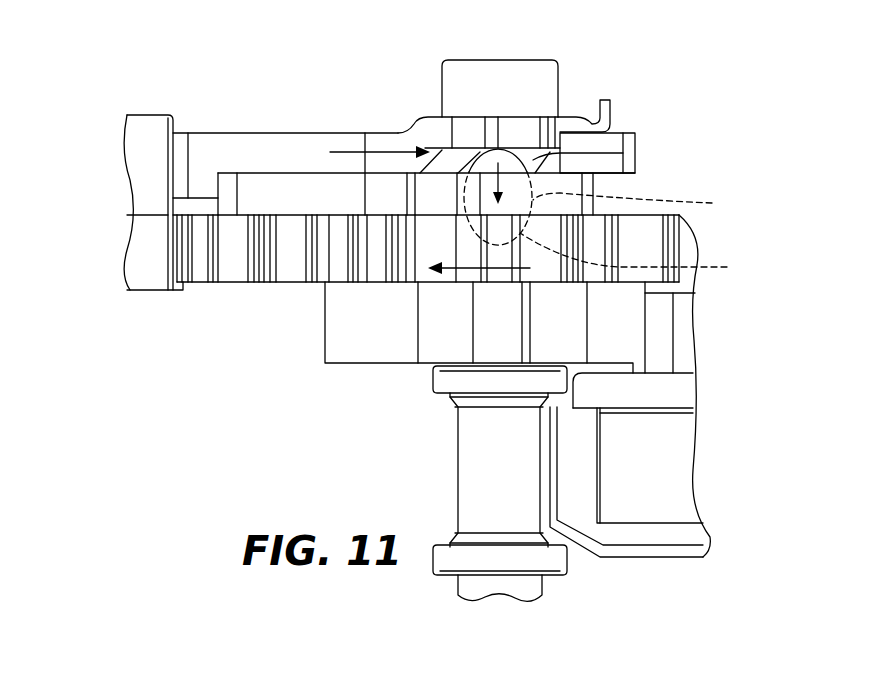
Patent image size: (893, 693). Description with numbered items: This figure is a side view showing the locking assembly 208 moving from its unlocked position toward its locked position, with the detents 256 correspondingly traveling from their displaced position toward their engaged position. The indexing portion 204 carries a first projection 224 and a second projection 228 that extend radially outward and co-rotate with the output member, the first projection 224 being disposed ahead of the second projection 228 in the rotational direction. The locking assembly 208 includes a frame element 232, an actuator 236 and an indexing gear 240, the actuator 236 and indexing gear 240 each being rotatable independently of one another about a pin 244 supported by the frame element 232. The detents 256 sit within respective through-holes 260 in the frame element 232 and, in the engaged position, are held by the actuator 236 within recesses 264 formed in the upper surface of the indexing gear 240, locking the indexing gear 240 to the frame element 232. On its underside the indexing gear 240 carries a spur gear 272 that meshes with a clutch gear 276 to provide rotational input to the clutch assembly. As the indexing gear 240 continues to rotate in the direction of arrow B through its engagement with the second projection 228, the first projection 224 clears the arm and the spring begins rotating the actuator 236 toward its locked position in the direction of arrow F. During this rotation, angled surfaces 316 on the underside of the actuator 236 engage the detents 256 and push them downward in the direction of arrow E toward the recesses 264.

The indexing portion 204 is at (143, 308).
The locking assembly 208 is at (600, 60).
The first projection 224 is at (160, 158).
The second projection 228 is at (167, 253).
The frame element 232 is at (262, 187).
The actuator 236 is at (300, 150).
The indexing gear 240 is at (293, 263).
The pin 244 is at (488, 450).
The detents 256 is at (583, 155).
The through-holes 260 is at (643, 203).
The recesses 264 is at (645, 256).
The spur gear 272 is at (325, 330).
The clutch gear 276 is at (657, 332).
The angled surfaces 316 is at (452, 160).
The arrow E is at (528, 170).
The arrow F is at (388, 150).
The arrow B is at (467, 277).